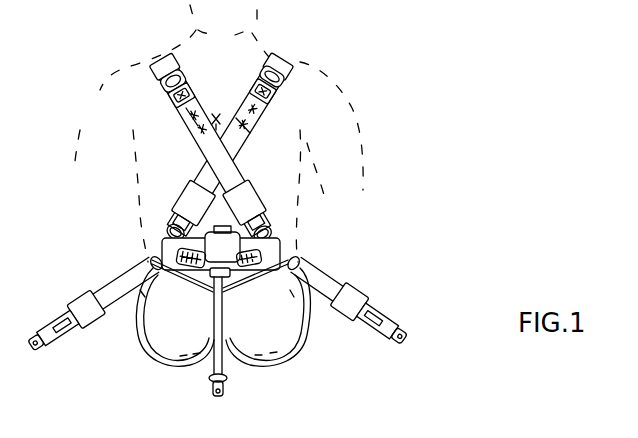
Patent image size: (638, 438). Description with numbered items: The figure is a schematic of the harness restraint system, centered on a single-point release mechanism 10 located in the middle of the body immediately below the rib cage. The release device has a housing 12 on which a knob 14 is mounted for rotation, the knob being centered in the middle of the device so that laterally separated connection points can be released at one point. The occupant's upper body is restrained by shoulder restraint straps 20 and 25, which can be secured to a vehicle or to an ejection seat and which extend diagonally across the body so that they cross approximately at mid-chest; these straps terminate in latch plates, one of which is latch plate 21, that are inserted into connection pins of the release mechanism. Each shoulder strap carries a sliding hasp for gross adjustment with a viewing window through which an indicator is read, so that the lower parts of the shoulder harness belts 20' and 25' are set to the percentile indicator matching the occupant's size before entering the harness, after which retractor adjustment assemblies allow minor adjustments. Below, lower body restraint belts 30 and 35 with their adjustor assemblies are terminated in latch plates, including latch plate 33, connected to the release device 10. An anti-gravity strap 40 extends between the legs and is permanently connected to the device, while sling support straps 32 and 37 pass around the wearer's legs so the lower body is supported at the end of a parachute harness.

The single-point release mechanism 10 is at (229, 208).
The housing 12 is at (247, 273).
The knob 14 is at (200, 269).
The shoulder restraint strap 20 is at (206, 132).
The lower part of shoulder harness belt 20' is at (119, 136).
The latch plate 21 is at (188, 242).
The shoulder restraint strap 25 is at (243, 129).
The lower part of shoulder harness belt 25' is at (321, 134).
The lower body restraint belt 30 is at (95, 303).
The sling support strap 32 is at (138, 349).
The latch plate 33 is at (167, 253).
The lower body restraint belt 35 is at (355, 300).
The sling support strap 37 is at (303, 331).
The anti-gravity strap 40 is at (224, 381).